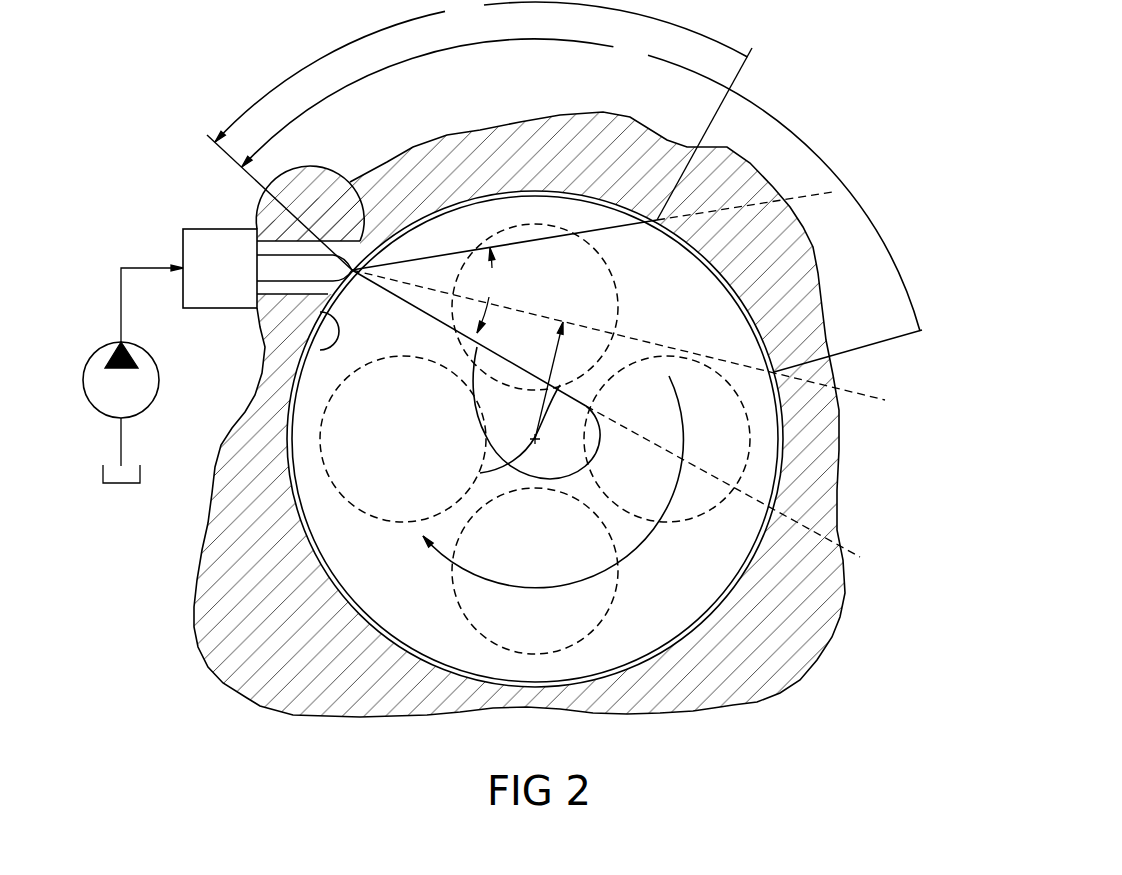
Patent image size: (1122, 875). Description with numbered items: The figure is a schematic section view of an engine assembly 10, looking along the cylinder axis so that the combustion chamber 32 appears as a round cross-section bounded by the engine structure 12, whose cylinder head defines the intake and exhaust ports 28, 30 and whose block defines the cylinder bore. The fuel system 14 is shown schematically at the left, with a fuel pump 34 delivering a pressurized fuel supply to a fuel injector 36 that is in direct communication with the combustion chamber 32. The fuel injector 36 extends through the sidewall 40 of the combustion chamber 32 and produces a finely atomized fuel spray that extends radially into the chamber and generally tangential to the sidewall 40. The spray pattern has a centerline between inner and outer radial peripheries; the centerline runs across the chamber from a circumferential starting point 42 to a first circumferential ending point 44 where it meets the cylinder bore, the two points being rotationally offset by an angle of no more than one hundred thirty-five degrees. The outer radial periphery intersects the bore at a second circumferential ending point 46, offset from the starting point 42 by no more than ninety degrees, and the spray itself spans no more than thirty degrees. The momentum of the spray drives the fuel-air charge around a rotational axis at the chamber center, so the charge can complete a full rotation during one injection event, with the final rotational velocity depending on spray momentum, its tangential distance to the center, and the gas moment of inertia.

The engine assembly 10 is at (777, 93).
The engine structure 12 is at (822, 265).
The fuel system 14 is at (162, 237).
The intake port 28 is at (510, 227).
The exhaust port 30 is at (325, 467).
The combustion chamber 32 is at (612, 196).
The fuel pump 34 is at (148, 354).
The fuel injector 36 is at (221, 229).
The sidewall 40 is at (316, 352).
The circumferential starting point 42 is at (352, 184).
The first circumferential ending point 44 is at (780, 370).
The second circumferential ending point 46 is at (660, 215).